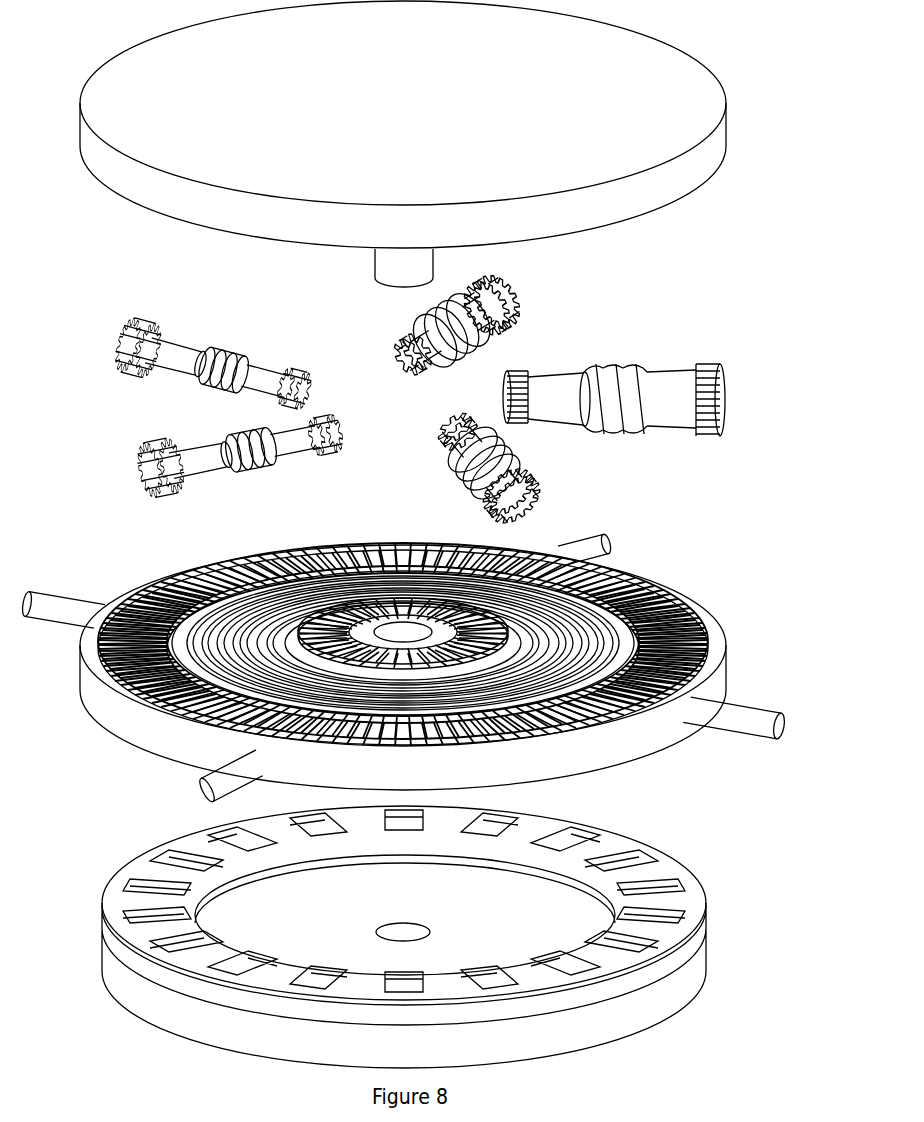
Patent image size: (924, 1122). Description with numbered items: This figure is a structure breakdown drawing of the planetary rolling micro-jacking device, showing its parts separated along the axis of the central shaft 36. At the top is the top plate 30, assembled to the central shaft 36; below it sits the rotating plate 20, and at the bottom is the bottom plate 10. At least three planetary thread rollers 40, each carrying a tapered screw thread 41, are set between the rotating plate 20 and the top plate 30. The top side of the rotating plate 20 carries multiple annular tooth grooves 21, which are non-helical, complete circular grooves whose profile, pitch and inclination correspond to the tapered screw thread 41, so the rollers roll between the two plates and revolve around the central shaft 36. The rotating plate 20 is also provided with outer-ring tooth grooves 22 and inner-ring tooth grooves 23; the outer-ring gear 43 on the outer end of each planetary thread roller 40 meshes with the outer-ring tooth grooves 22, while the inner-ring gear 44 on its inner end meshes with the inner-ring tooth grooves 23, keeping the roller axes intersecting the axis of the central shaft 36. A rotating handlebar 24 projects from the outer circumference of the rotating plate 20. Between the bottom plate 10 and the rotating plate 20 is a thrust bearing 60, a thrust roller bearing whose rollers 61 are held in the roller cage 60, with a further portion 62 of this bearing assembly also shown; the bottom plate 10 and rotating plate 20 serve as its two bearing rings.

The bottom plate 10 is at (396, 917).
The rotating plate 20 is at (403, 681).
The annular tooth grooves 21 is at (613, 648).
The outer-ring tooth grooves 22 is at (710, 657).
The inner-ring tooth grooves 23 is at (512, 620).
The rotating handlebar 24 is at (723, 726).
The top plate 30 is at (627, 107).
The central shaft 36 is at (395, 272).
The planetary thread rollers 40 is at (641, 355).
The tapered screw thread 41 is at (600, 380).
The outer-ring gear 43 is at (708, 368).
The inner-ring gear 44 is at (520, 375).
The thrust bearing 60 is at (143, 858).
The roller 61 is at (188, 862).
The ring surface 62 is at (157, 876).